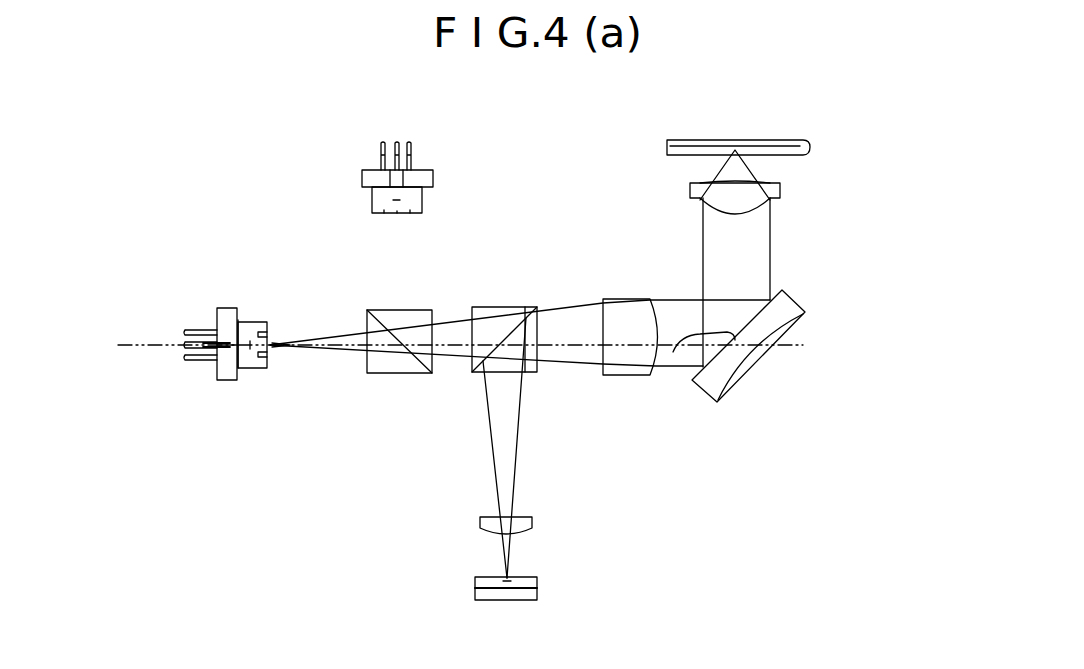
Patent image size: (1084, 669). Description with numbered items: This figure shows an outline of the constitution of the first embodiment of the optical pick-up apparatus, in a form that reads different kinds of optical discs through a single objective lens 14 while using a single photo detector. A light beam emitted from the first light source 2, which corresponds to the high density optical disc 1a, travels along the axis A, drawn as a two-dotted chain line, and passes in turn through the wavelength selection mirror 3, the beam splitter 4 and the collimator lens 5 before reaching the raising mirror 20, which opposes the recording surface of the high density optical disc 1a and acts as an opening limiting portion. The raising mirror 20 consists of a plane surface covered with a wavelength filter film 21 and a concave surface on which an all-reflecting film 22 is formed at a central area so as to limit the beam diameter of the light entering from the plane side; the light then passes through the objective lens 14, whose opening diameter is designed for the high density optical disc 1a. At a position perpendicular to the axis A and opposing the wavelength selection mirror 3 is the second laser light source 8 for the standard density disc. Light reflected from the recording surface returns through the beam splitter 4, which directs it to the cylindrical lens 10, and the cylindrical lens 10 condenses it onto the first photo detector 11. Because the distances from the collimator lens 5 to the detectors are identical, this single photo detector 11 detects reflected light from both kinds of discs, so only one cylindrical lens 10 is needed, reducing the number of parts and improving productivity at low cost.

The high density optical disc 1a is at (807, 143).
The first light source 2 is at (227, 320).
The wavelength selection mirror 3 is at (387, 317).
The beam splitter 4 is at (499, 327).
The collimator lens 5 is at (623, 327).
The second laser light source 8 is at (370, 180).
The cylindrical lens 10 is at (532, 525).
The first photo detector 11 is at (537, 585).
The objective lens 14 is at (690, 192).
The raising mirror 20 is at (783, 310).
The wavelength filter film 21 is at (673, 352).
The all-reflecting film 22 is at (750, 348).
The axis A is at (318, 350).